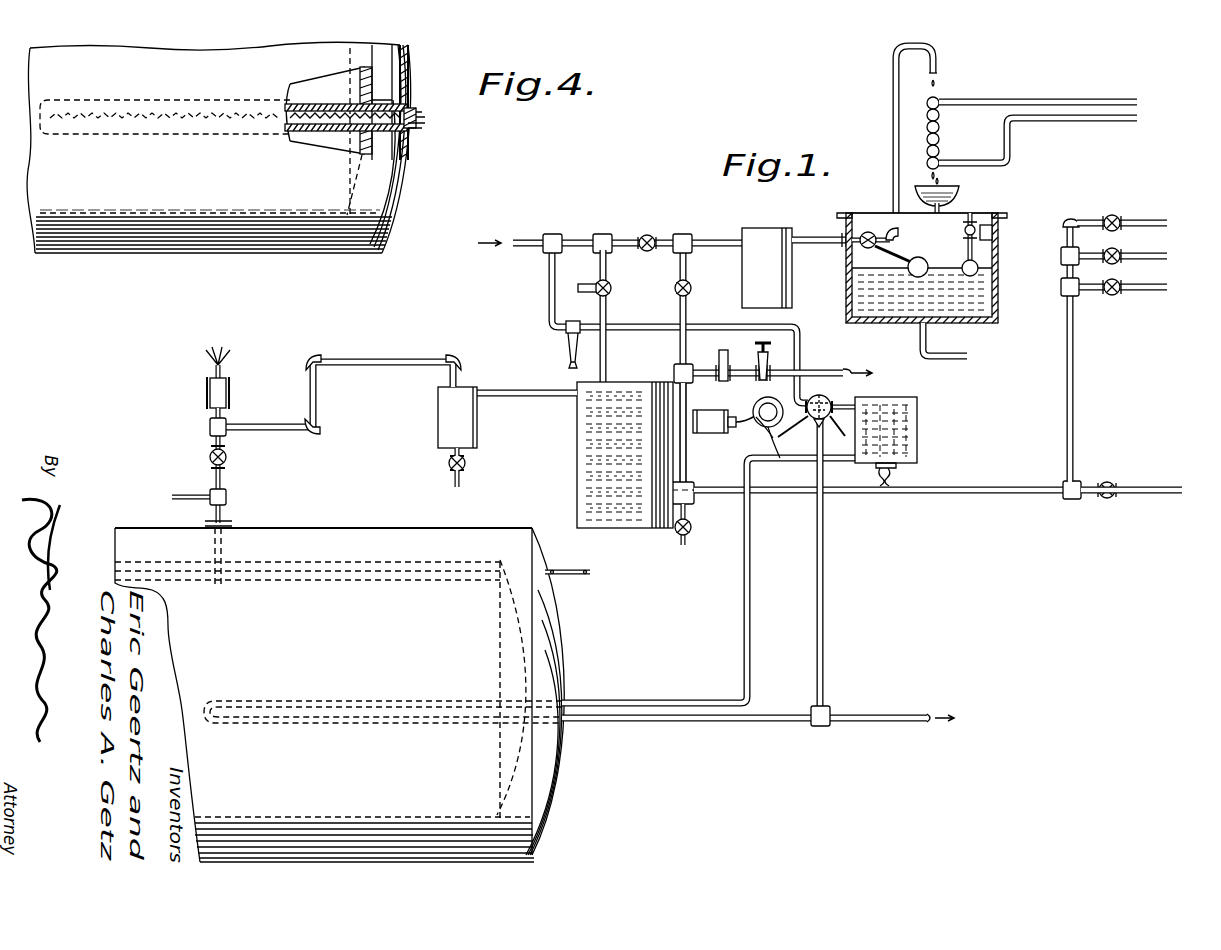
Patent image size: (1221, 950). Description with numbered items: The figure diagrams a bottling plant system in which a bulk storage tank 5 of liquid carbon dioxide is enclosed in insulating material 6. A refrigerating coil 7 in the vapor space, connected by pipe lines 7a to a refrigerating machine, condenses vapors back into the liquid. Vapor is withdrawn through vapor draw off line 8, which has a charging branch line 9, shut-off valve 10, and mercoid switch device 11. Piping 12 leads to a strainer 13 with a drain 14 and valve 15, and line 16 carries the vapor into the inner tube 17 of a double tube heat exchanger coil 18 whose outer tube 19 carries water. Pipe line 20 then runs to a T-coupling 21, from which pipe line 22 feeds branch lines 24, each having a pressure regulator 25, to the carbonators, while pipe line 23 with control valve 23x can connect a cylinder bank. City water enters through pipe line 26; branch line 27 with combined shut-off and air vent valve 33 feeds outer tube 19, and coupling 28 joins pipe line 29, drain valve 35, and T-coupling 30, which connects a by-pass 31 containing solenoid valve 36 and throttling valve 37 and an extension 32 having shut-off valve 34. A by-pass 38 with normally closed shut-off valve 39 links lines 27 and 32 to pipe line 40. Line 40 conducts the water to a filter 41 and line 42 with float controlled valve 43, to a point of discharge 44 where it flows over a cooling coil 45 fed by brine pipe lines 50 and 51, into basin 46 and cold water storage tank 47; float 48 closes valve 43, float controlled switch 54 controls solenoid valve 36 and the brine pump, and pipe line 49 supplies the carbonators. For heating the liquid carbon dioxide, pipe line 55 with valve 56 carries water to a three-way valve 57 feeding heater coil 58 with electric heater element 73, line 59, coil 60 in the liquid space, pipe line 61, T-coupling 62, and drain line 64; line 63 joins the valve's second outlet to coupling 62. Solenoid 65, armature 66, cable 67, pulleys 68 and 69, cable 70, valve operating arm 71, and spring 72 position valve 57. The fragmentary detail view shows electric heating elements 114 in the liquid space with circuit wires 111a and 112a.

In FIG. 4, the bulk storage tank 5 is at (358, 86).
In FIG. 1, the bulk storage tank 5 is at (510, 645).
In FIG. 4, the insulating material 6 is at (406, 92).
In FIG. 1, the insulating material 6 is at (566, 645).
In FIG. 1, the refrigerating coil 7 is at (392, 582).
In FIG. 1, the pipe lines 7a is at (552, 568).
In FIG. 1, the vapor draw off line 8 is at (223, 590).
In FIG. 1, the branch line 9 is at (186, 494).
In FIG. 1, the shut-off valve 10 is at (230, 456).
In FIG. 1, the pressure-operated mercoid switch device 11 is at (206, 396).
In FIG. 1, the piping 12 is at (292, 430).
In FIG. 1, the strainer 13 is at (436, 420).
In FIG. 1, the drain 14 is at (462, 480).
In FIG. 1, the valve 15 is at (446, 462).
In FIG. 1, the line 16 is at (508, 398).
In FIG. 1, the inner tube 17 is at (580, 400).
In FIG. 1, the double tube heat exchanger coil 18 is at (578, 466).
In FIG. 1, the outer tube 19 is at (637, 380).
In FIG. 1, the pipe line 20 is at (695, 512).
In FIG. 1, the T-coupling 21 is at (1066, 500).
In FIG. 1, the pipe line 22 is at (1065, 430).
In FIG. 1, the pipe line 23 is at (1160, 497).
In FIG. 1, the control valve 23x is at (1110, 480).
In FIG. 1, the branch lines 24 is at (1167, 290).
In FIG. 1, the pressure regulator 25 is at (1108, 216).
In FIG. 1, the city water line 26 is at (518, 238).
In FIG. 1, the branch line 27 is at (612, 262).
In FIG. 1, the coupling 28 is at (694, 488).
In FIG. 1, the pipe line 29 is at (692, 463).
In FIG. 1, the T-coupling 30 is at (676, 366).
In FIG. 1, the by-pass 31 is at (708, 411).
In FIG. 1, the extension 32 is at (678, 308).
In FIG. 1, the combined shut-off valve and air vent valve 33 is at (598, 282).
In FIG. 1, the shut-off valve 34 is at (690, 290).
In FIG. 1, the drain valve 35 is at (690, 538).
In FIG. 1, the solenoid valve 36 is at (718, 362).
In FIG. 1, the throttling valve 37 is at (772, 361).
In FIG. 1, the by-pass 38 is at (618, 238).
In FIG. 1, the shut-off valve 39 is at (655, 230).
In FIG. 1, the pipe line 40 is at (708, 238).
In FIG. 1, the filter 41 is at (767, 268).
In FIG. 1, the pipe line 42 is at (804, 238).
In FIG. 1, the float controlled valve 43 is at (864, 232).
In FIG. 1, the point of discharge 44 is at (938, 70).
In FIG. 1, the cooling coil 45 is at (942, 124).
In FIG. 1, the basin 46 is at (924, 188).
In FIG. 1, the cold water storage tank 47 is at (998, 292).
In FIG. 1, the float 48 is at (915, 257).
In FIG. 1, the pipe line 49 is at (938, 354).
In FIG. 1, the pipe line 50 is at (1058, 99).
In FIG. 1, the pipe line 51 is at (1100, 124).
In FIG. 1, the float controlled switch 54 is at (996, 244).
In FIG. 1, the pipe line 55 is at (548, 298).
In FIG. 1, the valve 56 is at (568, 336).
In FIG. 1, the three-way valve 57 is at (829, 400).
In FIG. 1, the heater coil 58 is at (918, 430).
In FIG. 1, the line 59 is at (751, 628).
In FIG. 1, the coil 60 is at (290, 702).
In FIG. 1, the pipe line 61 is at (640, 724).
In FIG. 1, the T-coupling 62 is at (810, 708).
In FIG. 1, the line 63 is at (826, 620).
In FIG. 1, the line 64 is at (855, 722).
In FIG. 1, the solenoid 65 is at (712, 434).
In FIG. 1, the armature 66 is at (724, 414).
In FIG. 1, the cable 67 is at (762, 428).
In FIG. 1, the peripherally grooved pulley 68 is at (768, 404).
In FIG. 1, the second peripherally grooved pulley 69 is at (798, 402).
In FIG. 1, the cable 70 is at (780, 454).
In FIG. 1, the valve operating arm 71 is at (794, 432).
In FIG. 1, the spring 72 is at (832, 432).
In FIG. 1, the electric heater element 73 is at (876, 476).
In FIG. 4, the electric heating elements 114 is at (152, 108).
In FIG. 4, the circuit wire 111a is at (445, 108).
In FIG. 4, the circuit wire 112a is at (424, 126).